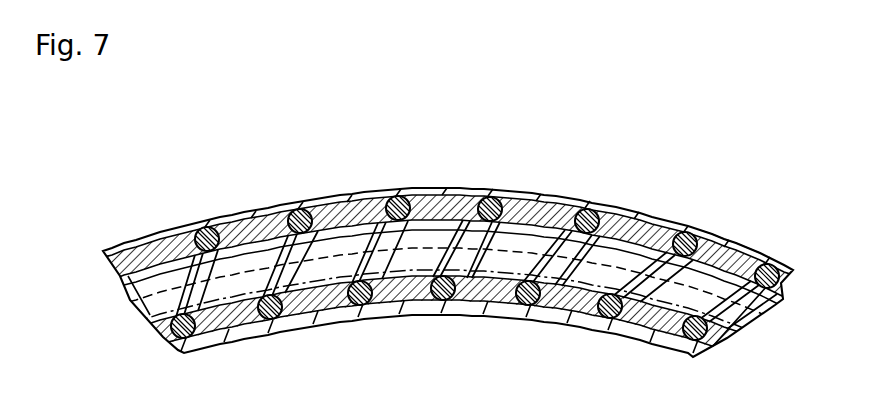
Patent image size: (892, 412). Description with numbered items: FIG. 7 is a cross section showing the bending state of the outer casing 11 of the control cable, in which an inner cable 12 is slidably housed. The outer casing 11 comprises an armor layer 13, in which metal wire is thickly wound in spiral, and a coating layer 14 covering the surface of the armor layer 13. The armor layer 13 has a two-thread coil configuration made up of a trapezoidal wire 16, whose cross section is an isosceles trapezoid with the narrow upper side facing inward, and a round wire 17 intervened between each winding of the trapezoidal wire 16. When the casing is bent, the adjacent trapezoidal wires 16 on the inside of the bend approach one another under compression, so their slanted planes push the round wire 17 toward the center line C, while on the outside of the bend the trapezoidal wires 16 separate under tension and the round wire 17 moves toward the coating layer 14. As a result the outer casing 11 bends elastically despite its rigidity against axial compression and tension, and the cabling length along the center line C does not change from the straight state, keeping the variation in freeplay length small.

The outer casing 11 is at (666, 210).
The inner cable 12 is at (663, 300).
The armor layer 13 is at (475, 230).
The coating layer 14 is at (437, 190).
The trapezoidal wire 16 is at (541, 200).
The round wire 17 is at (598, 202).
The center line C is at (724, 233).